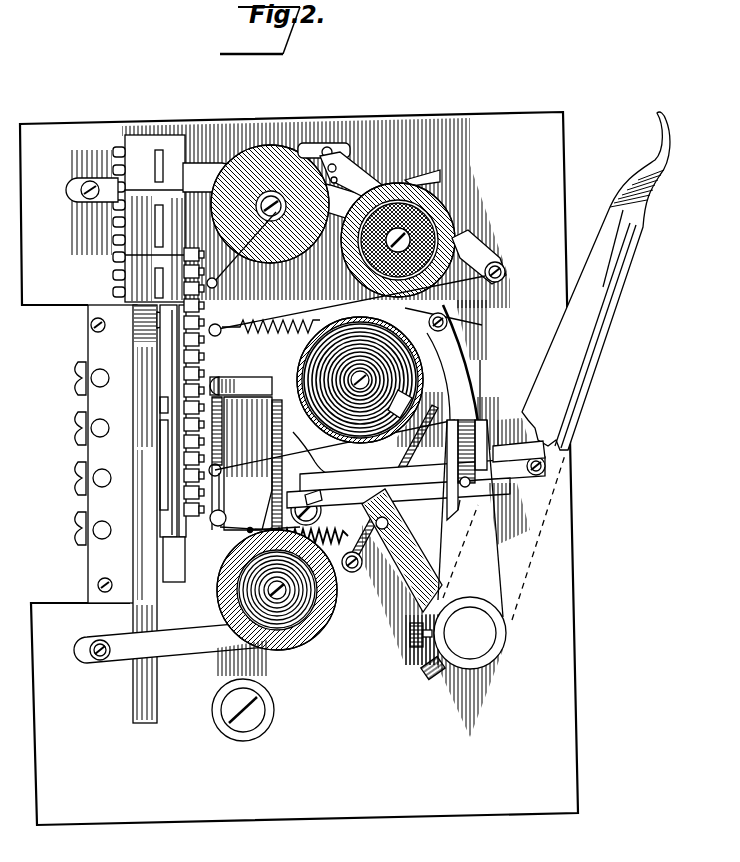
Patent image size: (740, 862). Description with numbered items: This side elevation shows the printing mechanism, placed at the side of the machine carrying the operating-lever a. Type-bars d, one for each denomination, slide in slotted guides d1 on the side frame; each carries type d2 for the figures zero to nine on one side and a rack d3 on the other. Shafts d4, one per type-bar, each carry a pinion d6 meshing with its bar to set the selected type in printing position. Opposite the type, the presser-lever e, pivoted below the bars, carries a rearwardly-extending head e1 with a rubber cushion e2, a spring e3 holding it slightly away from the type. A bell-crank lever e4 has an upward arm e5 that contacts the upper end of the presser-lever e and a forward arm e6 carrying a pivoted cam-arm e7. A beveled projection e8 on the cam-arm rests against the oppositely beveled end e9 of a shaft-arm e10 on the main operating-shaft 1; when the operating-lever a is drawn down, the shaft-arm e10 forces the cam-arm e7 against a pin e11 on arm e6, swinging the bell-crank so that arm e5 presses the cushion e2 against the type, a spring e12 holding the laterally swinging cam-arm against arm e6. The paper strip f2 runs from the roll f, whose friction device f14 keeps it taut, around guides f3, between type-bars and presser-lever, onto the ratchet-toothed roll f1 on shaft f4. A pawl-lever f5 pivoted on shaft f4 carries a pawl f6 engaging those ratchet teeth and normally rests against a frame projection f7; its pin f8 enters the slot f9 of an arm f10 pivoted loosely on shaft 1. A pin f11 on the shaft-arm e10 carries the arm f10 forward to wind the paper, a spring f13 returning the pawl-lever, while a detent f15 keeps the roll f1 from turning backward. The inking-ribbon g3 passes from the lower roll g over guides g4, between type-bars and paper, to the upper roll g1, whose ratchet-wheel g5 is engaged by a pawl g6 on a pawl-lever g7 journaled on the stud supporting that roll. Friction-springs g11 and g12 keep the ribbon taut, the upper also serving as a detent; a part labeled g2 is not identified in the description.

The operating-lever a is at (603, 272).
The main operating-shaft 1 is at (478, 633).
The type-bars d is at (153, 145).
The slotted guides d1 is at (168, 598).
The type d2 is at (232, 310).
The rack d3 is at (118, 292).
The shafts d4 is at (92, 384).
The pinion d6 is at (82, 432).
The ribbon roll g is at (322, 622).
The upper ribbon roll g1 is at (276, 198).
The arm g2 is at (215, 638).
The inking-ribbon g3 is at (212, 278).
The guides g4 is at (218, 530).
The ratchet-wheel g5 is at (272, 160).
The pawl g6 is at (320, 148).
The pawl-lever g7 is at (385, 183).
The friction-spring g11 is at (213, 162).
The friction-spring g12 is at (228, 548).
The paper roll f is at (310, 395).
The paper roll f1 is at (362, 266).
The paper strip f2 is at (272, 312).
The guides f3 is at (232, 340).
The shaft f4 is at (402, 243).
The pawl-lever f5 is at (457, 360).
The pawl f6 is at (443, 310).
The projection f7 is at (477, 373).
The laterally-projecting pin f8 is at (452, 505).
The slot f9 is at (497, 387).
The upwardly-projecting arm f10 is at (448, 596).
The laterally-extending pin f11 is at (382, 530).
The spring f13 is at (265, 366).
The friction device f14 is at (420, 420).
The detent f15 is at (482, 262).
The presser-lever e is at (275, 480).
The head e1 is at (262, 387).
The rubber cushion e2 is at (247, 437).
The spring e3 is at (274, 516).
The bell-crank lever e4 is at (335, 478).
The arm e5 is at (311, 455).
The arm e6 is at (500, 475).
The cam-arm e7 is at (545, 450).
The beveled projection e8 is at (438, 492).
The beveled end e9 is at (351, 503).
The shaft-arm e10 is at (420, 550).
The pin e11 is at (350, 478).
The spring e12 is at (545, 480).